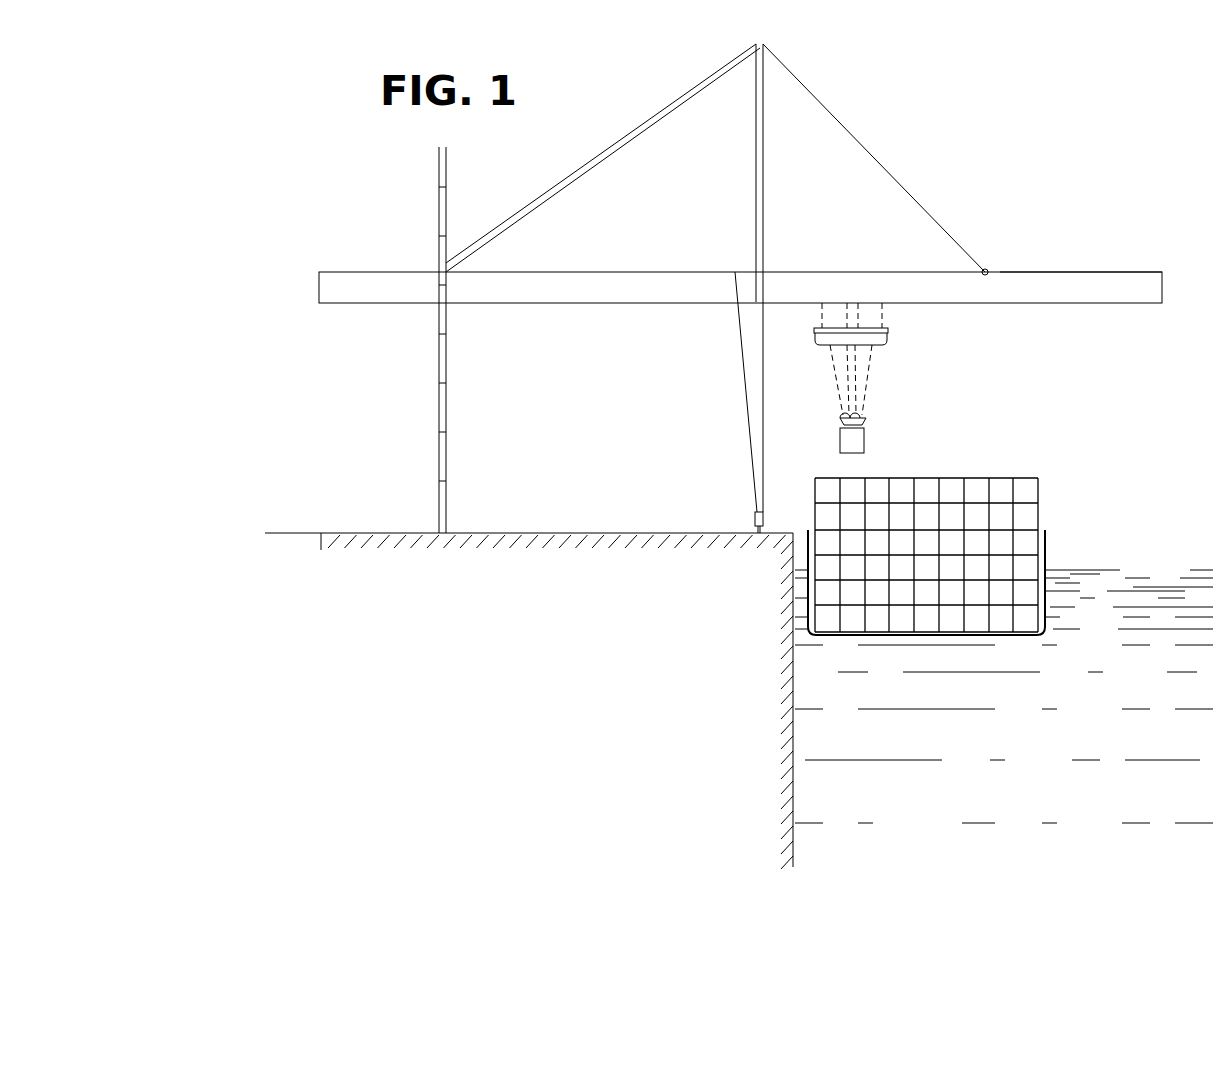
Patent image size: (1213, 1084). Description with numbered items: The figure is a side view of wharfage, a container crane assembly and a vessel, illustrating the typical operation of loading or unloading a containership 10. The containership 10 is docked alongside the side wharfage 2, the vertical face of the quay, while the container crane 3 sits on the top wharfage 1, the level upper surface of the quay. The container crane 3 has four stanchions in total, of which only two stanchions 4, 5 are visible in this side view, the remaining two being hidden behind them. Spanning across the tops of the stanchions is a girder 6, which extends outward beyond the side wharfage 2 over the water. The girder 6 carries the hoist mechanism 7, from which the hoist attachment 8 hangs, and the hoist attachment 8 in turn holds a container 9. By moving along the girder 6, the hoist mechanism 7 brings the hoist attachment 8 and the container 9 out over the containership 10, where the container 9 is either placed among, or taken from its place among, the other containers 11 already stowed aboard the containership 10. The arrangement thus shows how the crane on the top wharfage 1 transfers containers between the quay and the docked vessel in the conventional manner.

The top wharfage 1 is at (366, 533).
The side wharfage 2 is at (795, 800).
The container crane 3 is at (318, 290).
The stanchion 4 is at (435, 200).
The stanchion 5 is at (742, 376).
The girder 6 is at (1096, 270).
The hoist mechanism 7 is at (888, 337).
The hoist attachment 8 is at (866, 418).
The container 9 is at (866, 440).
The containership 10 is at (1047, 548).
The other containers 11 is at (1040, 490).